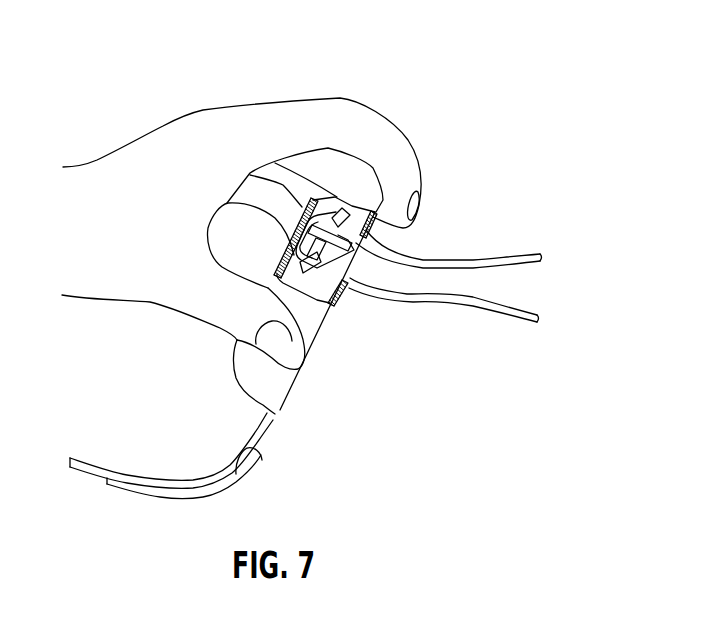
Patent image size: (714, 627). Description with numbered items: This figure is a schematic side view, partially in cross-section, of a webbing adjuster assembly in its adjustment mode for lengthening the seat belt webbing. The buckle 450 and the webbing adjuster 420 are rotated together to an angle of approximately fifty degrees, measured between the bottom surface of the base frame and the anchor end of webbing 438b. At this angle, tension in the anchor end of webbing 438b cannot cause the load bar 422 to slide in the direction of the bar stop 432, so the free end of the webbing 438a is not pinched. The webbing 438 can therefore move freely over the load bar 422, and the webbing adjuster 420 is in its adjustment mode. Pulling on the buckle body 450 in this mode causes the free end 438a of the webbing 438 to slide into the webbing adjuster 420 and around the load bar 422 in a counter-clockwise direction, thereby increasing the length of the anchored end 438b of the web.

The webbing adjuster 420 is at (290, 203).
The load bar 422 is at (336, 207).
The bar stop 432 is at (369, 233).
The webbing 438 is at (484, 288).
The free end of the webbing 438a is at (497, 255).
The anchor end of webbing 438b is at (495, 315).
The buckle 450 is at (316, 333).